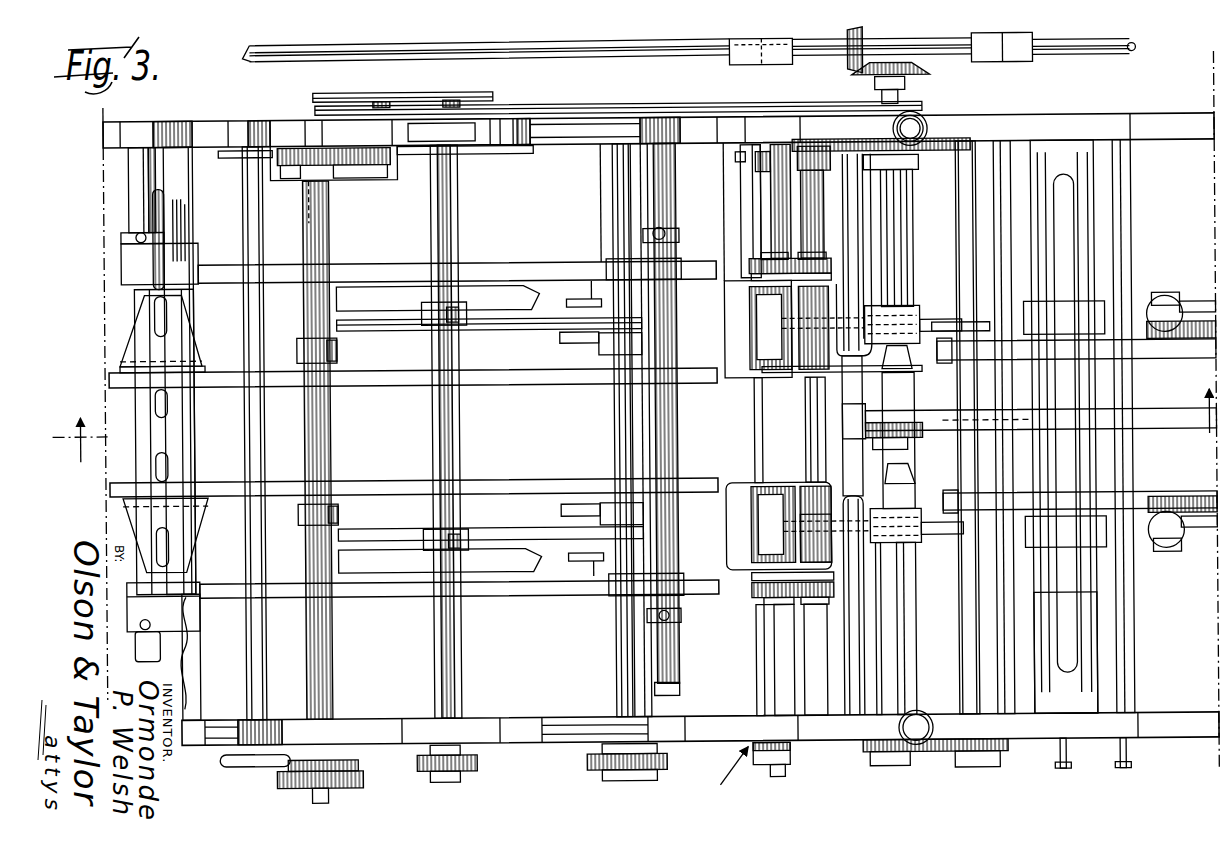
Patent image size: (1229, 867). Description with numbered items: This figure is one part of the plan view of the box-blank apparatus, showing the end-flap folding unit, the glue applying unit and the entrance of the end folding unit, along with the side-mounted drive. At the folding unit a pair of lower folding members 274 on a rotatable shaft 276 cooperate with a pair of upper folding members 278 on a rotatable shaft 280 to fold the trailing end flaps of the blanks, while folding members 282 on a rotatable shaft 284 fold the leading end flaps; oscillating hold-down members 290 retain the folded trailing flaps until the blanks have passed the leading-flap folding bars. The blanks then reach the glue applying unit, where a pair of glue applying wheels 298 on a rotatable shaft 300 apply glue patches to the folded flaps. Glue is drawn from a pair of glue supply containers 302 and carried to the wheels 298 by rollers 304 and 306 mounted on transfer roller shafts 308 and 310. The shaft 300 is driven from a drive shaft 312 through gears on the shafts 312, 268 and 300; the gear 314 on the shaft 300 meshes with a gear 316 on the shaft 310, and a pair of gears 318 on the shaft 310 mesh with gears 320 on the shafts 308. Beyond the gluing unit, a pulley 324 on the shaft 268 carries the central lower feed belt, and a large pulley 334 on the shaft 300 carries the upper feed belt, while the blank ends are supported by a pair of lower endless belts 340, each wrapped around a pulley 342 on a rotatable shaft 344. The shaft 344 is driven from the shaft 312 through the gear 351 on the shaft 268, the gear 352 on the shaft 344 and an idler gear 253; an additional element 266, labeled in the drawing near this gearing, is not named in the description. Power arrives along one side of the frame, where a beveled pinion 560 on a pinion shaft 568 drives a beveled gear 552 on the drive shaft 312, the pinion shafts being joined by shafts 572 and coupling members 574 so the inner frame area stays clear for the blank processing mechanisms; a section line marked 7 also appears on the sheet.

The shaft 572 is at (1096, 63).
The coupling member 574 is at (1005, 69).
The beveled pinion 560 is at (850, 42).
The pinion shaft 568 is at (885, 50).
The beveled gear 552 is at (852, 79).
The drive shaft 312 is at (905, 102).
The gear 316 is at (822, 148).
The gear 314 is at (962, 145).
The transfer roller shaft 310 is at (812, 186).
The gear 320 is at (745, 640).
The transfer roller shaft 308 is at (757, 224).
The rotatable shaft 300 is at (893, 193).
The rotatable shaft 284 is at (600, 214).
The rotatable shaft 276 is at (323, 251).
The rotatable shaft 280 is at (447, 256).
The upper folding member 278 is at (458, 526).
The lower folding member 274 is at (340, 510).
The folding member 282 is at (584, 510).
The oscillating hold-down member 290 is at (745, 503).
The glue supply container 302 is at (735, 583).
The gear 318 is at (830, 600).
The roller 304 is at (760, 358).
The roller 306 is at (762, 508).
The glue applying wheel 298 is at (928, 565).
The gear 266 is at (885, 388).
The pulley 324 is at (905, 445).
The large pulley 334 is at (905, 472).
The pulley 342 is at (985, 522).
The lower endless belt 340 is at (1147, 500).
The rotatable shaft 344 is at (960, 662).
The gear 351 is at (835, 782).
The shaft 268 is at (885, 776).
The idler gear 253 is at (920, 769).
The gear 352 is at (997, 773).
The section line 7 is at (632, 433).